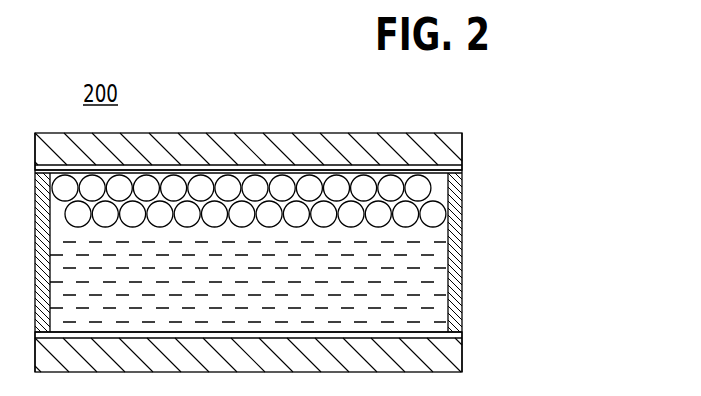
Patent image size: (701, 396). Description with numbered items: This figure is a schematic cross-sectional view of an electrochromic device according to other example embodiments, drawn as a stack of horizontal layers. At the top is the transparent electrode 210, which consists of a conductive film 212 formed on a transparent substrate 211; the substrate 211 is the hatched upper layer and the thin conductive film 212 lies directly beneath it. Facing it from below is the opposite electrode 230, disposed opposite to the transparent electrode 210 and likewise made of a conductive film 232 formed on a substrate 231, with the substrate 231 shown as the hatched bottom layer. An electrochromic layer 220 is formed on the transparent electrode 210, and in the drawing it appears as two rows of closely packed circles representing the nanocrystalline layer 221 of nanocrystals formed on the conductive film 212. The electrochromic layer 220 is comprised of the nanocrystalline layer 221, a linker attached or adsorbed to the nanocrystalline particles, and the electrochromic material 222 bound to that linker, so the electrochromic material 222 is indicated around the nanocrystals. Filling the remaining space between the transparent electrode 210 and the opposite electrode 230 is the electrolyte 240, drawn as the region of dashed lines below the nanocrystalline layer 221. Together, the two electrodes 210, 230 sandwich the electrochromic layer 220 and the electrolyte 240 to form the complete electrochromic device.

The transparent electrode 210 is at (315, 157).
The transparent substrate 211 is at (462, 144).
The conductive film 212 is at (462, 170).
The electrochromic layer 220 is at (315, 252).
The nanocrystalline layer 221 is at (435, 216).
The electrochromic material 222 is at (428, 236).
The electrolyte 240 is at (432, 292).
The opposite electrode 230 is at (315, 344).
The substrate 231 is at (462, 337).
The conductive film 232 is at (462, 357).